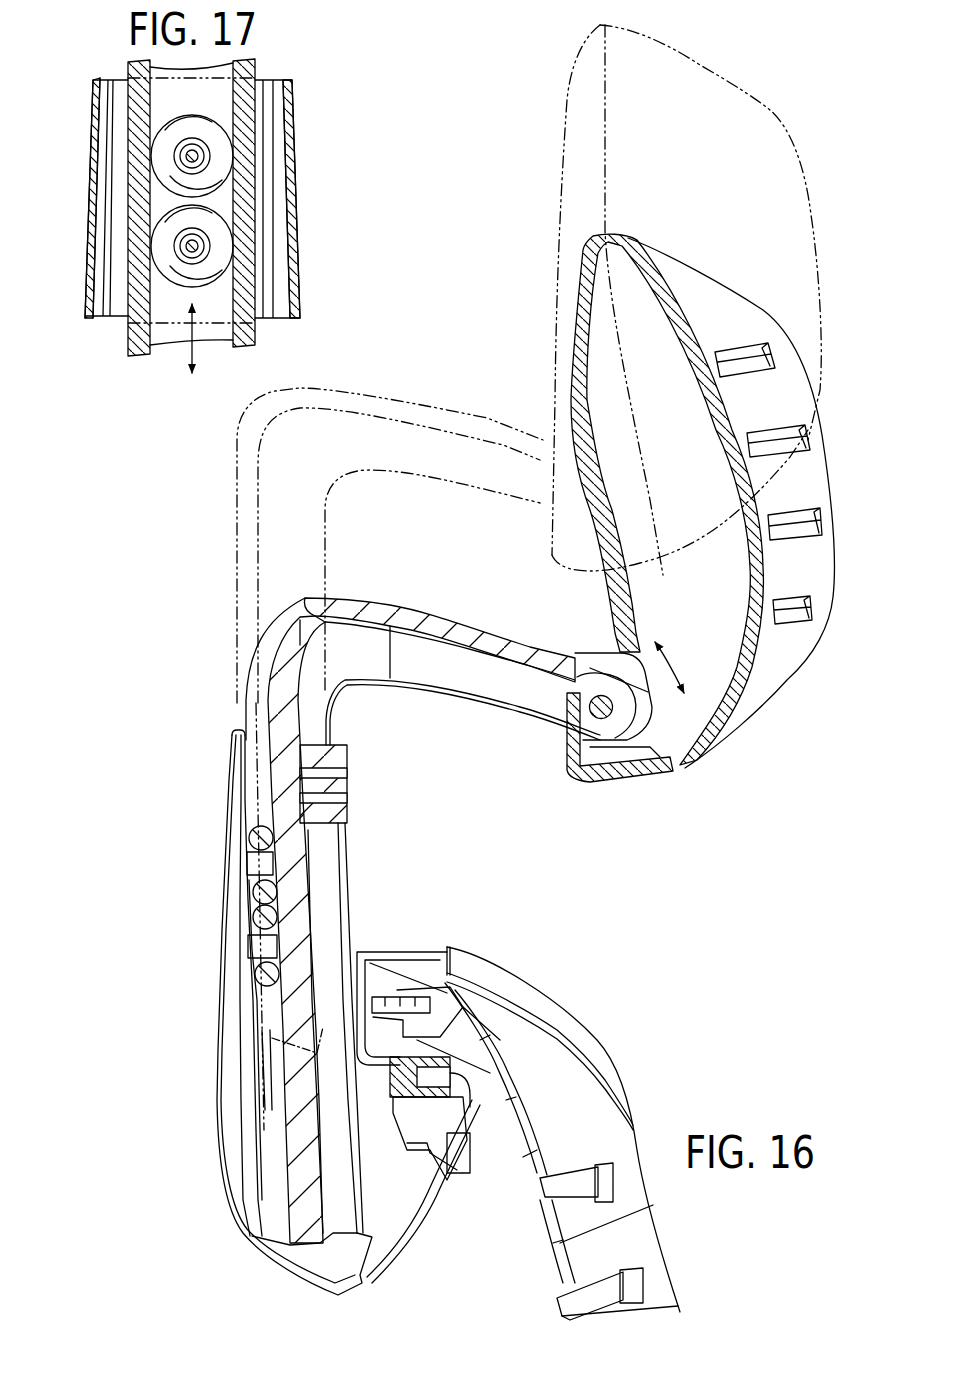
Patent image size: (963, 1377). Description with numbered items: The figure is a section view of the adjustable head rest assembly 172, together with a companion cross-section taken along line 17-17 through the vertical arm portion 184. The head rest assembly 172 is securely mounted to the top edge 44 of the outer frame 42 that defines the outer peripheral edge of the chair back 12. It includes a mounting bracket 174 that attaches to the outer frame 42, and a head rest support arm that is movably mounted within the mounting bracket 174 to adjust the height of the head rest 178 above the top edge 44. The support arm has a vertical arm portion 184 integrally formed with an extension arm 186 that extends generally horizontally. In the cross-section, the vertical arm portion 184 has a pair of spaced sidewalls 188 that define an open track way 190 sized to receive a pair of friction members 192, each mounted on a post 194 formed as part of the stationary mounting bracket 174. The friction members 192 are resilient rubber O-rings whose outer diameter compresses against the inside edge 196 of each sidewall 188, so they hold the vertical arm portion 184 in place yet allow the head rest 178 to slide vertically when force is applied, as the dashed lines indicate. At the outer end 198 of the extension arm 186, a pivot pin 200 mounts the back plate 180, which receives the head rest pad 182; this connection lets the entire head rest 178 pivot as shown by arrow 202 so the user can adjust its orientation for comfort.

In FIG. 16, the chair back 12 is at (624, 1052).
In FIG. 16, the line 17- 17 is at (244, 714).
In FIG. 16, the outer frame 42 is at (373, 948).
In FIG. 16, the top edge 44 is at (420, 948).
In FIG. 16, the head rest assembly 172 is at (730, 815).
In FIG. 16, the mounting bracket 174 is at (248, 905).
In FIG. 16, the head rest 178 is at (840, 495).
In FIG. 16, the back plate 180 is at (583, 316).
In FIG. 16, the head rest pad 182 is at (703, 290).
In FIG. 17, the vertical arm portion 184 is at (242, 90).
In FIG. 16, the vertical arm portion 184 is at (282, 652).
In FIG. 16, the extension arm 186 is at (410, 620).
In FIG. 17, the sidewalls 188 is at (138, 348).
In FIG. 17, the open track way 190 is at (158, 95).
In FIG. 17, the friction members 192 is at (215, 136).
In FIG. 16, the friction members 192 is at (249, 836).
In FIG. 17, the post 194 is at (178, 162).
In FIG. 16, the post 194 is at (254, 862).
In FIG. 17, the inside edge 196 is at (162, 307).
In FIG. 16, the outer end 198 is at (600, 662).
In FIG. 16, the pivot pin 200 is at (590, 712).
In FIG. 16, the arrow 202 is at (680, 668).